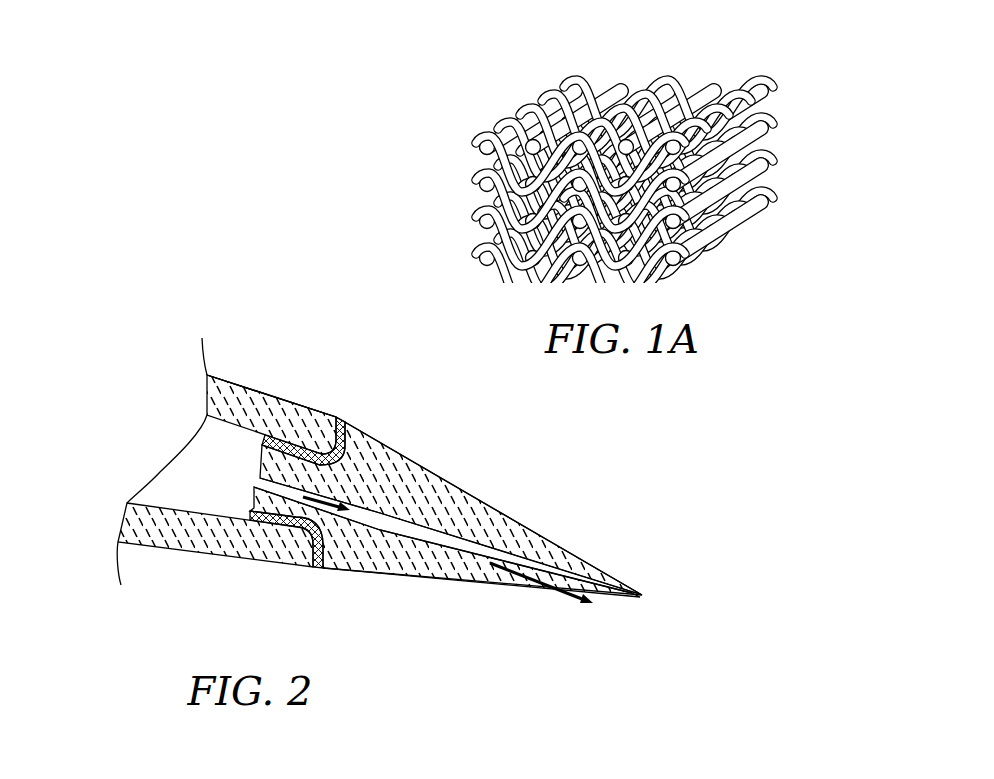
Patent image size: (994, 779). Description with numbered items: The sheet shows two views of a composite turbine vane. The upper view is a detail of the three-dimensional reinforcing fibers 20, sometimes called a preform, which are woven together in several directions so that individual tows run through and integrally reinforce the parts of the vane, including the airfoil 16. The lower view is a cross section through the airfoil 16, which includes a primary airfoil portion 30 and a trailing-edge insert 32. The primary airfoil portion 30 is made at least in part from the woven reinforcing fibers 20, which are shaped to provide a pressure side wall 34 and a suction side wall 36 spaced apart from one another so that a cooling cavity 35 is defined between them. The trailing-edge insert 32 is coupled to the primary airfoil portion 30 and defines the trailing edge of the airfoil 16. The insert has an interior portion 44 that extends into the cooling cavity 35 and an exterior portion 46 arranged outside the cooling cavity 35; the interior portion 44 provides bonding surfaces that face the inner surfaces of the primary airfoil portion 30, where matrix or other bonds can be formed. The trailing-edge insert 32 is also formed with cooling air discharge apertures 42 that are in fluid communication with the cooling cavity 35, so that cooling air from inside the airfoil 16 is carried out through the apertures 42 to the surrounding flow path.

In FIG. 1A, the three-dimensional reinforcing fibers 20 is at (672, 98).
In FIG. 2, the airfoil 16 is at (357, 385).
In FIG. 2, the primary airfoil portion 30 is at (278, 376).
In FIG. 2, the trailing-edge insert 32 is at (443, 460).
In FIG. 2, the pressure side wall 34 is at (193, 565).
In FIG. 2, the cooling cavity 35 is at (187, 467).
In FIG. 2, the suction side wall 36 is at (228, 364).
In FIG. 2, the cooling air discharge apertures 42 is at (441, 548).
In FIG. 2, the interior portion 44 is at (245, 456).
In FIG. 2, the exterior portion 46 is at (378, 589).